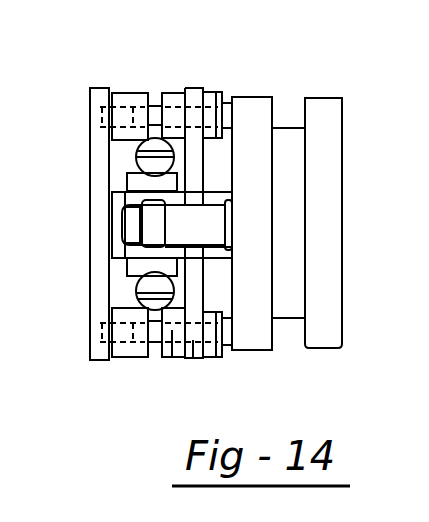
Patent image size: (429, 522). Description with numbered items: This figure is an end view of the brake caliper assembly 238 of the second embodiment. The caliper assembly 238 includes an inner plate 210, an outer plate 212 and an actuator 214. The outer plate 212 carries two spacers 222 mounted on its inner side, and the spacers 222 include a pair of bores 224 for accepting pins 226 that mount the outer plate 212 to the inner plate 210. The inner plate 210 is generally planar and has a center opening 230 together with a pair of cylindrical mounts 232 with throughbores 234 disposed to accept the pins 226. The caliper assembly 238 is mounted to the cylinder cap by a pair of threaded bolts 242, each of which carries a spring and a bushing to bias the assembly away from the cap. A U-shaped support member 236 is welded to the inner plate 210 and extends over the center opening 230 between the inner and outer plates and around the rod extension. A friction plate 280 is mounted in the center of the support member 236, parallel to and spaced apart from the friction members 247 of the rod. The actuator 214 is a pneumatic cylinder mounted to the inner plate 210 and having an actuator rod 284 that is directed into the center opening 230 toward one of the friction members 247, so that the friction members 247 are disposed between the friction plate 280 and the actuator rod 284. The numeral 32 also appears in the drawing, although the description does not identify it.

The inner plate 210 is at (193, 357).
The outer plate 212 is at (97, 364).
The actuator 214 is at (328, 210).
The spacers 222 is at (123, 100).
The bores 224 is at (93, 133).
The pins 226 is at (152, 100).
The center opening 230 is at (197, 180).
The cylindrical mounts 232 is at (175, 93).
The throughbores 234 is at (222, 97).
The U-shaped support member 236 is at (123, 250).
The caliper assembly 238 is at (147, 72).
The threaded bolts 242 is at (138, 160).
The friction members 247 is at (137, 210).
The friction plate 280 is at (127, 223).
The actuator rod 284 is at (217, 220).
The shaft 32 is at (172, 357).